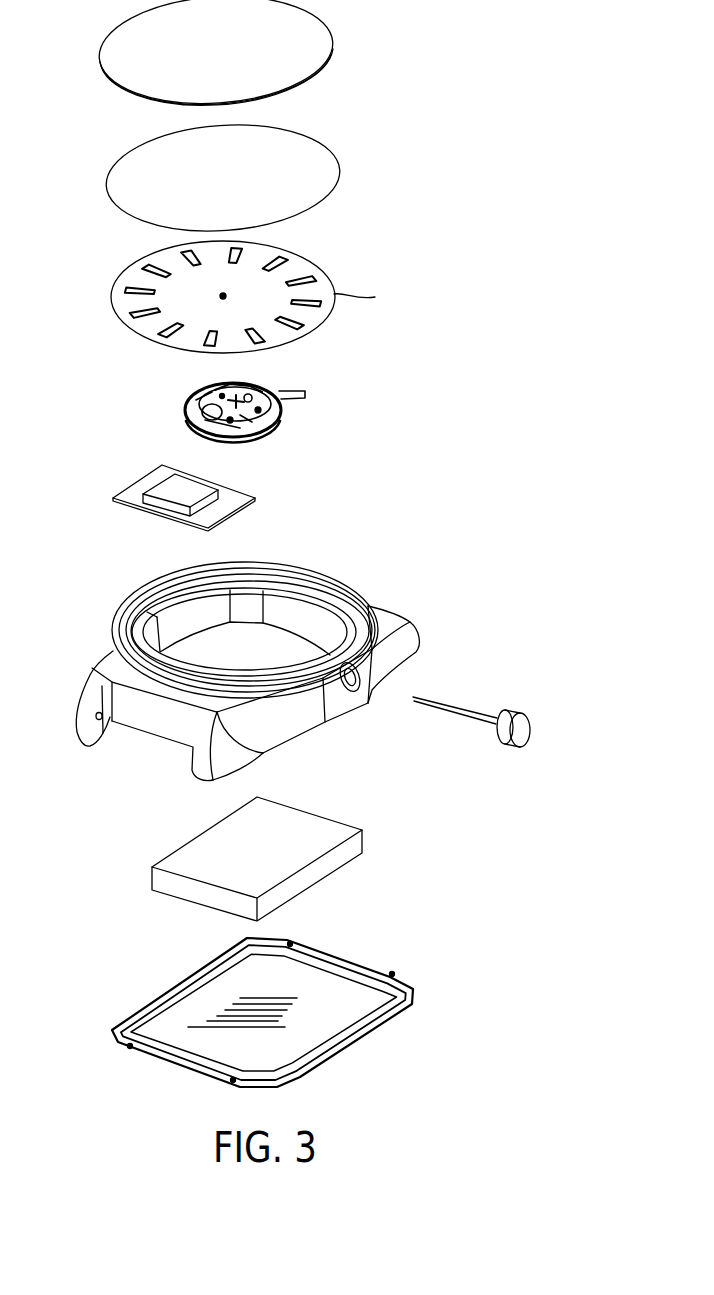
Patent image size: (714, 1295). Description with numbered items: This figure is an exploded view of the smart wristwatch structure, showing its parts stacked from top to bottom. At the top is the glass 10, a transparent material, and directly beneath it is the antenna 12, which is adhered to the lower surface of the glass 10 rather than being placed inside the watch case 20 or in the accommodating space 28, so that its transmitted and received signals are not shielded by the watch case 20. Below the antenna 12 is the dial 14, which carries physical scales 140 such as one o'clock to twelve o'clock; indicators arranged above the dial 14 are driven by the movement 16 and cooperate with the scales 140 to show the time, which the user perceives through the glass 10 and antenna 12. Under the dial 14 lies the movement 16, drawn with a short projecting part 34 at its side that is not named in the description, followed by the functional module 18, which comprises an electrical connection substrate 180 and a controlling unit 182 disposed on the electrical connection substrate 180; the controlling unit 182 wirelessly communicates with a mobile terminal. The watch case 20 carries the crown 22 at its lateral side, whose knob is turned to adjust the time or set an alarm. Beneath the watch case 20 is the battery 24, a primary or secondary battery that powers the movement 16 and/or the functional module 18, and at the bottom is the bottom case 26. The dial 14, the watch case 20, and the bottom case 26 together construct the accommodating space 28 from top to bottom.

The glass 10 is at (302, 41).
The antenna 12 is at (296, 171).
The dial 14 is at (300, 262).
The scales 140 is at (366, 313).
The movement 16 is at (268, 386).
The stem of movement 34 is at (300, 396).
The functional module 18 is at (178, 479).
The electrical connection substrate 180 is at (140, 488).
The controlling unit 182 is at (205, 492).
The watch case 20 is at (247, 626).
The accommodating space 28 is at (253, 645).
The crown 22 is at (462, 708).
The battery 24 is at (197, 857).
The bottom case 26 is at (152, 984).